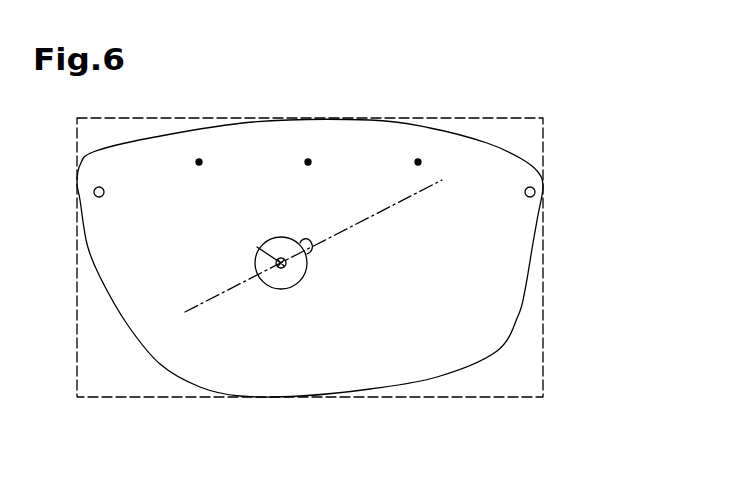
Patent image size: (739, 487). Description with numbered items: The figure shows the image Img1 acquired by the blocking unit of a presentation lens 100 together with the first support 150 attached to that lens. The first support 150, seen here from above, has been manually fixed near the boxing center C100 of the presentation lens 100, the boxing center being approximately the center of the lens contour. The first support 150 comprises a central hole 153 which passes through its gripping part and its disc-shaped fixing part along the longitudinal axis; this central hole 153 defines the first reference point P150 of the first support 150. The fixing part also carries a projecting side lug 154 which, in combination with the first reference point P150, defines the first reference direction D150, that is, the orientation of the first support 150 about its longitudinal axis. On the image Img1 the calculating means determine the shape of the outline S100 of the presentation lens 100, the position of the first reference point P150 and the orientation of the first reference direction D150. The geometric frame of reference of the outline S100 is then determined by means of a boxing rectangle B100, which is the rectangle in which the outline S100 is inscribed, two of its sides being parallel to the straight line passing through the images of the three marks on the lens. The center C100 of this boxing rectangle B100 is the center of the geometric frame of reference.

The presentation lens 100 is at (487, 140).
The first support 150 is at (283, 232).
The central hole 153 is at (256, 250).
The projecting side lug 154 is at (303, 263).
The first reference direction D150 is at (402, 199).
The first reference point P150 is at (272, 277).
The boxing center C100 is at (311, 254).
The outline S100 is at (517, 316).
The boxing rectangle B100 is at (117, 399).
The image Img1 is at (573, 188).